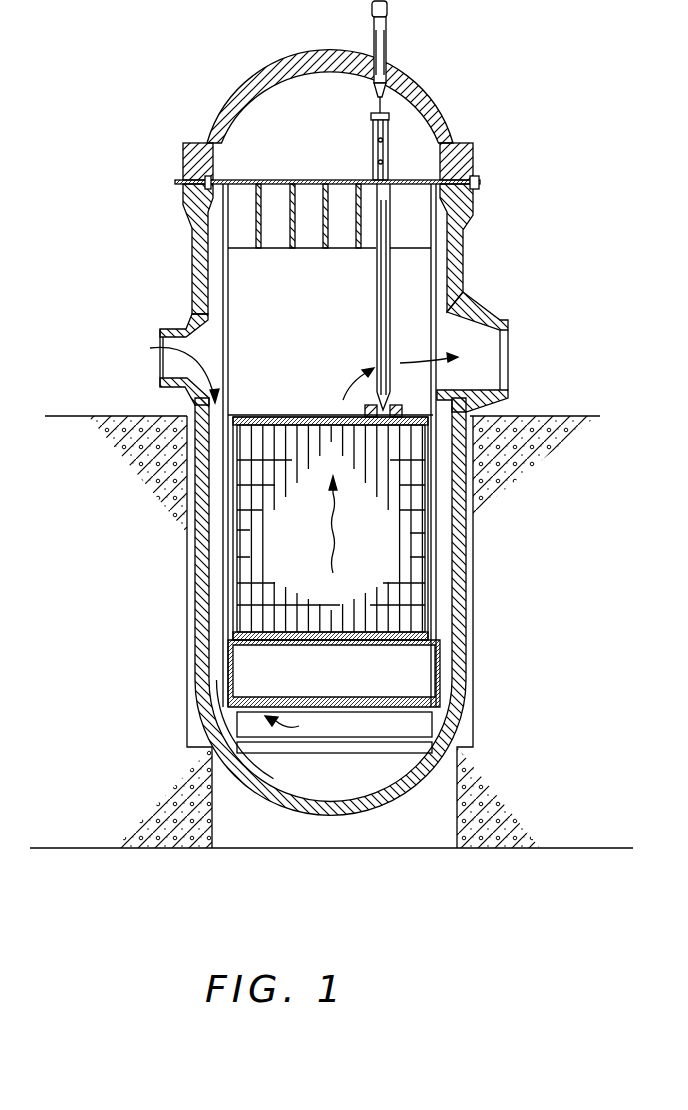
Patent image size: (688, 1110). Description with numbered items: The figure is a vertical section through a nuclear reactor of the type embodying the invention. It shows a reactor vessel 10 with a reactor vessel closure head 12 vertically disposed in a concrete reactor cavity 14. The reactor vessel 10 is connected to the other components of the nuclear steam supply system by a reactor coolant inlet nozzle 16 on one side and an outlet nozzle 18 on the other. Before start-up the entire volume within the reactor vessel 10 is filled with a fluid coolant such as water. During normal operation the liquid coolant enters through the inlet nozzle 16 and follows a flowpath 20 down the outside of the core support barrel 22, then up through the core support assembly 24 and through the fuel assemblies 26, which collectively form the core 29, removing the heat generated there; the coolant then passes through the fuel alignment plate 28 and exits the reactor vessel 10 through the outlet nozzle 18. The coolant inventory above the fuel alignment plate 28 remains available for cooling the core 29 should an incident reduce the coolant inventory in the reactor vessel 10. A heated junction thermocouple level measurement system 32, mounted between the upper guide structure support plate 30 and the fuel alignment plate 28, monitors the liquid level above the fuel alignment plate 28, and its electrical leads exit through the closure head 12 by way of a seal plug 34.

The reactor vessel 10 is at (509, 188).
The reactor vessel closure head 12 is at (434, 102).
The concrete reactor cavity 14 is at (187, 747).
The reactor coolant inlet nozzle 16 is at (166, 330).
The outlet nozzle 18 is at (500, 322).
The flowpath 20 is at (160, 350).
The core support barrel 22 is at (226, 552).
The core support assembly 24 is at (440, 675).
The fuel assemblies 26 is at (433, 541).
The fuel alignment plate 28 is at (236, 412).
The core 29 is at (432, 597).
The upper guide structure support plate 30 is at (270, 180).
The heated junction thermocouple level measurement system 32 is at (395, 248).
The seal plug 34 is at (388, 62).